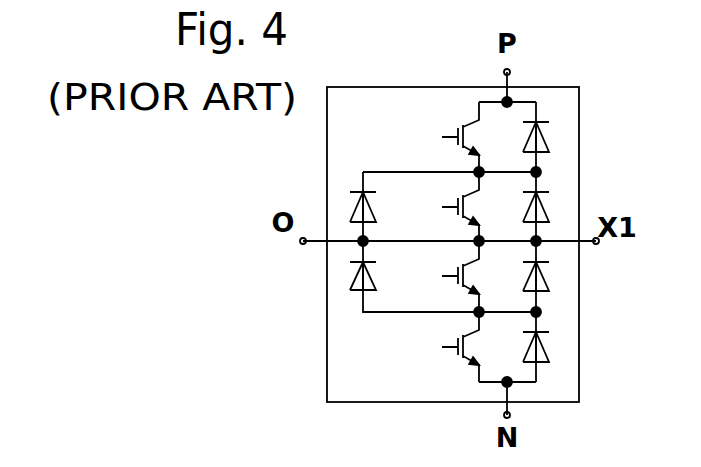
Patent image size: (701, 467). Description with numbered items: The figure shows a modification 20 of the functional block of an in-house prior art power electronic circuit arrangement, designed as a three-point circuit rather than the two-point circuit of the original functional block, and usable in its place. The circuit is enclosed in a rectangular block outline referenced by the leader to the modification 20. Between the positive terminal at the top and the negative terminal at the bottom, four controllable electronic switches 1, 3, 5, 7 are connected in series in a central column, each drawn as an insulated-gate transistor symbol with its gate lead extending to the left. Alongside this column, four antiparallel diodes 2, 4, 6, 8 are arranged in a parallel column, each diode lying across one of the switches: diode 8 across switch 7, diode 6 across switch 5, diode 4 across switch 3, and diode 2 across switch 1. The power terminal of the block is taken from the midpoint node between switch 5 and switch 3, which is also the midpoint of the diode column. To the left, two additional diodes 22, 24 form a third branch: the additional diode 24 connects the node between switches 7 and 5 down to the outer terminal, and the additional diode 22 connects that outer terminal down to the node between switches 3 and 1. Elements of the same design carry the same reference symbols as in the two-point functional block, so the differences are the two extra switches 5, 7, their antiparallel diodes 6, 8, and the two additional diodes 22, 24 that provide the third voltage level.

The controllable electronic switch 1 is at (453, 347).
The antiparallel diode 2 is at (548, 348).
The controllable electronic switch 3 is at (452, 276).
The antiparallel diode 4 is at (548, 278).
The controllable electronic switch 5 is at (452, 206).
The antiparallel diode 6 is at (548, 208).
The controllable electronic switch 7 is at (452, 137).
The antiparallel diode 8 is at (548, 137).
The modification of the functional block 20 is at (563, 381).
The additional diode 22 is at (383, 268).
The additional diode 24 is at (383, 215).